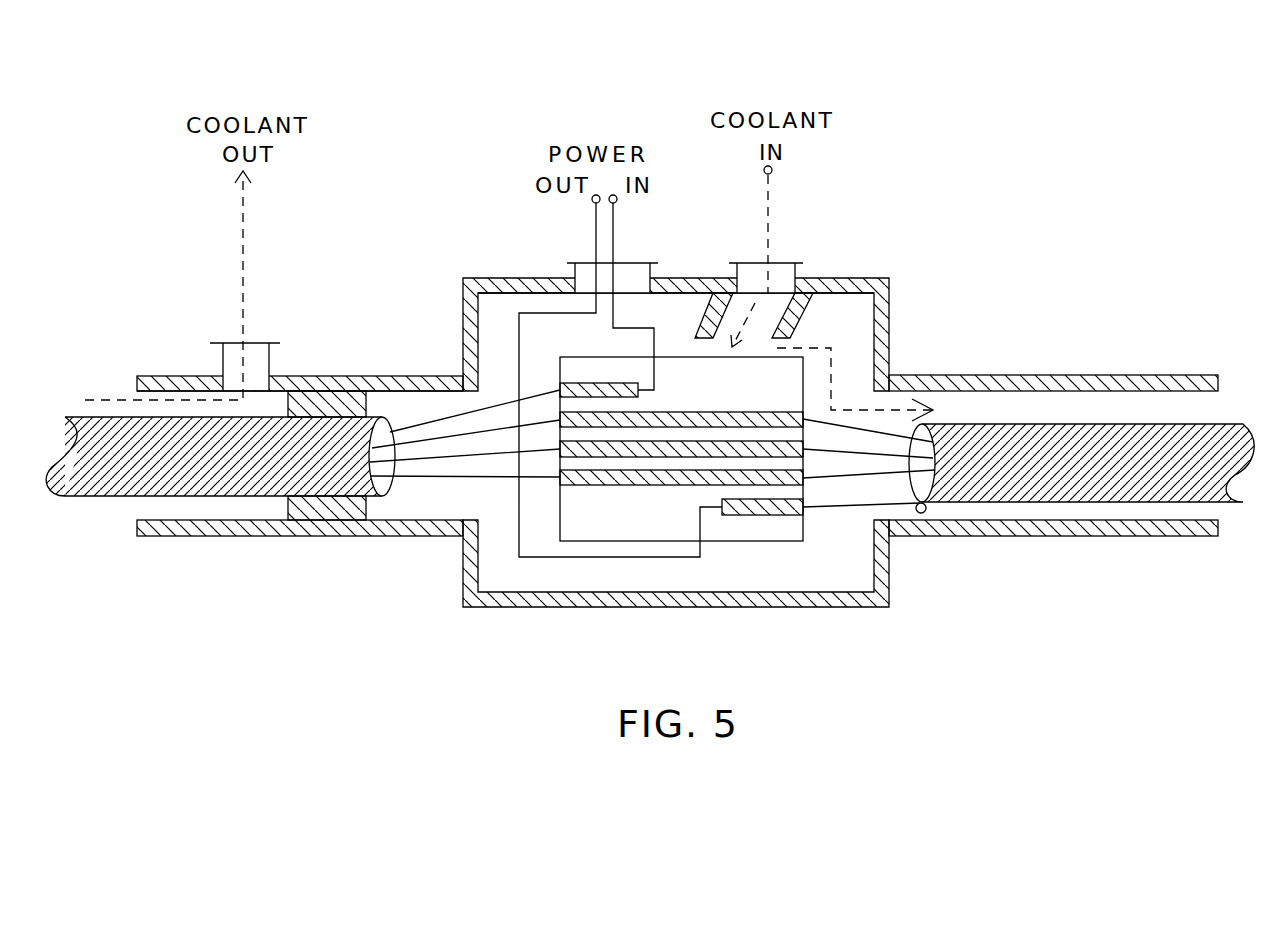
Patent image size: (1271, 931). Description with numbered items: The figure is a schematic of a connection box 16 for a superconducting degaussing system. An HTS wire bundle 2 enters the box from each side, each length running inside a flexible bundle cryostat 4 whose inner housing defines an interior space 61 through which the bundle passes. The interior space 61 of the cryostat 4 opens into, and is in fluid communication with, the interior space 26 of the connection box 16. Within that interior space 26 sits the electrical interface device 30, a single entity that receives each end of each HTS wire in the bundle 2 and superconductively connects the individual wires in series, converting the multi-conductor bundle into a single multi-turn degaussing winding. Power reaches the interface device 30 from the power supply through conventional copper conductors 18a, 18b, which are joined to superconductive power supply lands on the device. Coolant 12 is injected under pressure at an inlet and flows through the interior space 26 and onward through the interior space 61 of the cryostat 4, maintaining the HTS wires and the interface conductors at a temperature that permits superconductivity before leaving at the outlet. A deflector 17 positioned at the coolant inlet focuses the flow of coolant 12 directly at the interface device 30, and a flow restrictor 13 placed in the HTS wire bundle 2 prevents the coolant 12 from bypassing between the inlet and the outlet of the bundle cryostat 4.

The HTS wire bundle 2 is at (137, 497).
The bundle cryostat 4 is at (1053, 375).
The coolant 12 is at (245, 261).
The flow restrictor 13 is at (317, 511).
The connection box 16 is at (720, 608).
The deflector 17 is at (797, 331).
The power supply conductor 18a is at (618, 232).
The power supply conductor 18b is at (595, 235).
The interior space 26 is at (840, 581).
The electrical interface device 30 is at (625, 529).
The interior space 61 is at (210, 520).